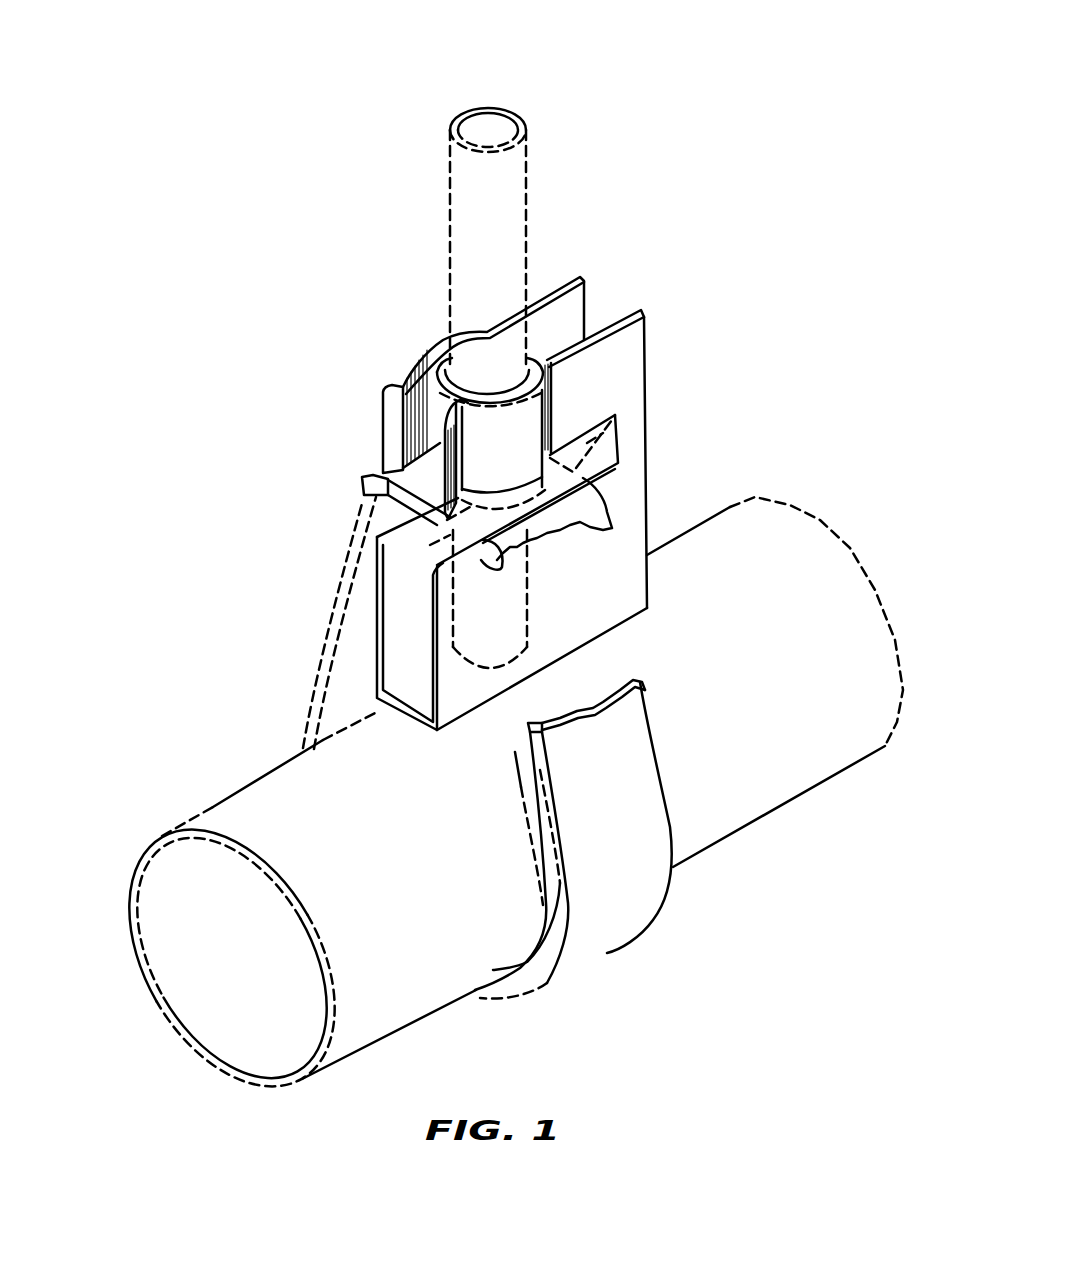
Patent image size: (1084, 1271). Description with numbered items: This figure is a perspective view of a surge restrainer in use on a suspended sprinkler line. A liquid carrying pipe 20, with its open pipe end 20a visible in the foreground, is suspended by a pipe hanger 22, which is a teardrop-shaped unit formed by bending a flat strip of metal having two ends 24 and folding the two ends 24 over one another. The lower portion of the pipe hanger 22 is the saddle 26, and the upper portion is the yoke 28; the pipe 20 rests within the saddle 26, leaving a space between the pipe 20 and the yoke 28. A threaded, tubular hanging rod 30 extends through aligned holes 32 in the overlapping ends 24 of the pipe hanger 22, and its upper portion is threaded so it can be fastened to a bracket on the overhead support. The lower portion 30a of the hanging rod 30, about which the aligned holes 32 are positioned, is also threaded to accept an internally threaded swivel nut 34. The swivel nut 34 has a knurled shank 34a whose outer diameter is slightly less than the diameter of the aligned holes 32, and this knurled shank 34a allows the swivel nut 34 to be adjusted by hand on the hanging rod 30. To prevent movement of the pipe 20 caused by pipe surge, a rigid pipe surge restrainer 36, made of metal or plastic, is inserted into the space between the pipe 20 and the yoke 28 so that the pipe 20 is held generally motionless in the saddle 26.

The liquid carrying pipe 20 is at (764, 530).
The pipe end 20a is at (178, 857).
The pipe hanger 22 is at (300, 639).
The ends 24 is at (452, 556).
The saddle 26 is at (606, 952).
The yoke 28 is at (600, 425).
The hanging rod 30 is at (507, 180).
The lower portion of the hanging rod 30a is at (513, 632).
The aligned holes 32 is at (560, 495).
The swivel nut 34 is at (413, 477).
The knurled shank 34a is at (437, 413).
The pipe surge restrainer 36 is at (675, 325).